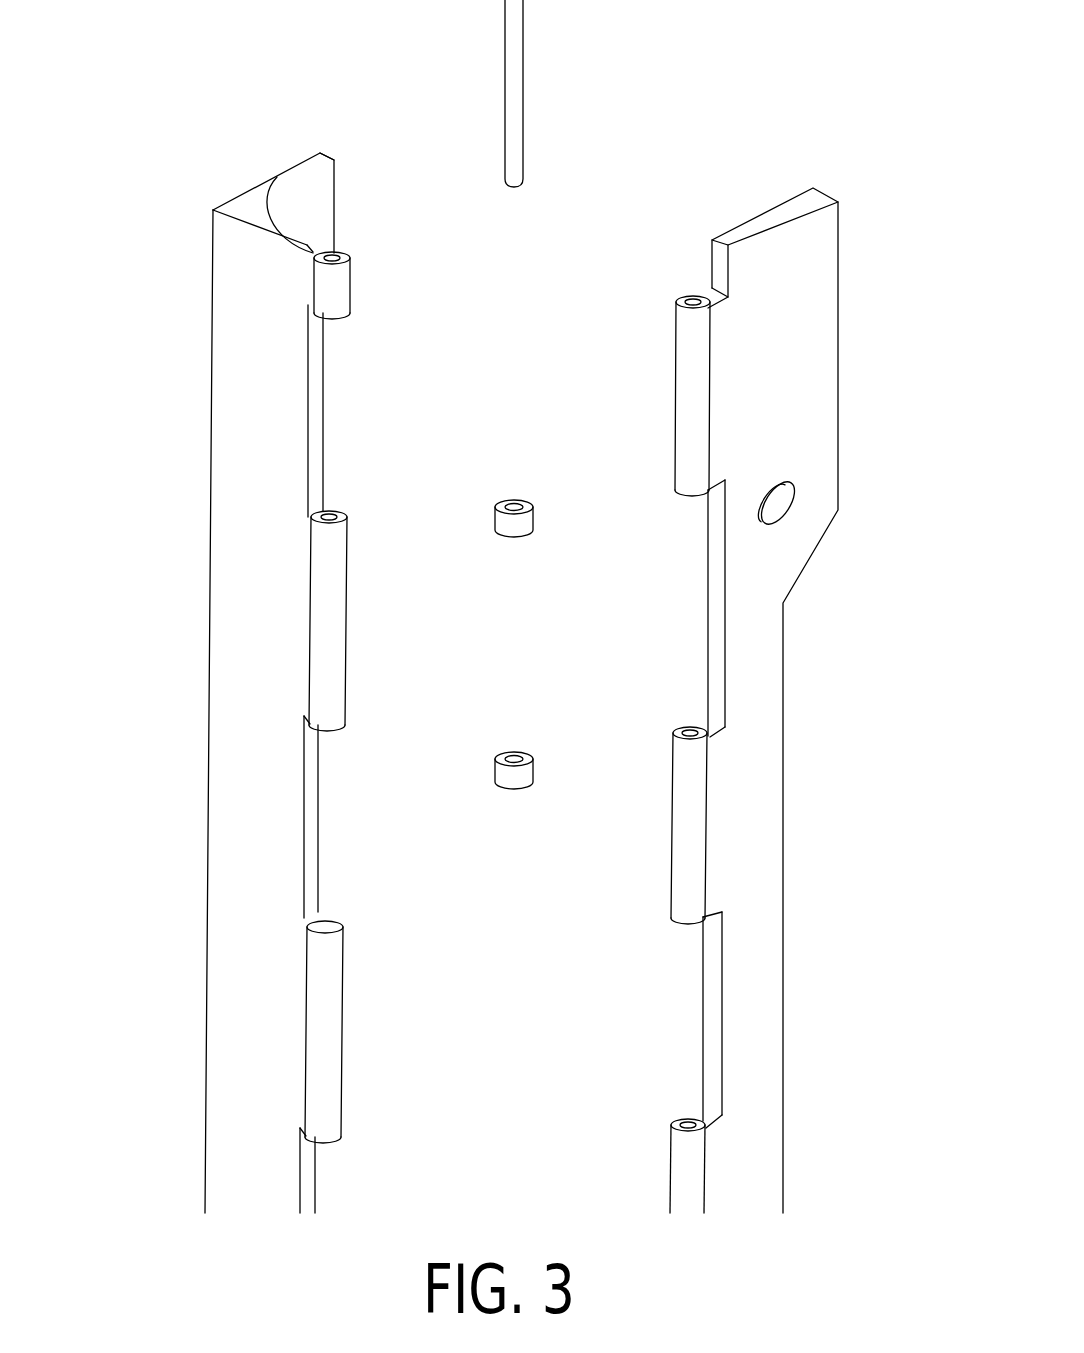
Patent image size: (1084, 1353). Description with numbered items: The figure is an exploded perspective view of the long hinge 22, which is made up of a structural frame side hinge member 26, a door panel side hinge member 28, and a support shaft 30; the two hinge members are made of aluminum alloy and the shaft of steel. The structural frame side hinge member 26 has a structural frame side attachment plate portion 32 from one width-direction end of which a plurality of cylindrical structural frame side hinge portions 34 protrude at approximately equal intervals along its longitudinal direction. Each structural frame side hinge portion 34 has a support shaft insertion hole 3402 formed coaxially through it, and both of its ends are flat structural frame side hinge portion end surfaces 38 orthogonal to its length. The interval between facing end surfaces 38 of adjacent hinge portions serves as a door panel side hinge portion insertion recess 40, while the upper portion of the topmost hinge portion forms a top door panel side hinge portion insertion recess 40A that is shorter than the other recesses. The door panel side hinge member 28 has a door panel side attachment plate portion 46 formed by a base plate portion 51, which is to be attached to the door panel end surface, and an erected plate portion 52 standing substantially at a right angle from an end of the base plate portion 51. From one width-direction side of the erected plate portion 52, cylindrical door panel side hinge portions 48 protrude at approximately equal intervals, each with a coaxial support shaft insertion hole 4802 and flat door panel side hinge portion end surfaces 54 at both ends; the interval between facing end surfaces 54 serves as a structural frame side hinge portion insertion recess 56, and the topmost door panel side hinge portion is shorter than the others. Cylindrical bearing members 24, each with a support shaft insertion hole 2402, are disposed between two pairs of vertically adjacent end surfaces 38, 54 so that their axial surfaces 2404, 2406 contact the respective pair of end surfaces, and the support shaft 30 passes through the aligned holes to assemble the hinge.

The long hinge 22 is at (636, 102).
The bearing member 24 is at (524, 639).
The support shaft insertion hole 2402 is at (510, 505).
The surface of bearing member 2404 is at (528, 505).
The surface of bearing member 2406 is at (516, 536).
The structural frame side hinge member 26 is at (785, 865).
The door panel side hinge member 28 is at (207, 823).
The support shaft 30 is at (524, 81).
The structural frame side attachment plate portion 32 is at (750, 993).
The structural frame side hinge portion 34 is at (677, 689).
The support shaft insertion hole 3402 is at (697, 298).
The structural frame side hinge portion end surface 38 is at (683, 297).
The door panel side hinge portion insertion recess 40 is at (717, 585).
The top door panel side hinge portion insertion recess 40A is at (722, 267).
The door panel side attachment plate portion 46 is at (231, 290).
The door panel side hinge portion 48 is at (424, 682).
The support shaft insertion hole 4802 is at (331, 252).
The base plate portion 51 is at (268, 180).
The erected plate portion 52 is at (248, 290).
The door panel side hinge portion end surface 54 is at (353, 283).
The structural frame side hinge portion insertion recess 56 is at (317, 388).